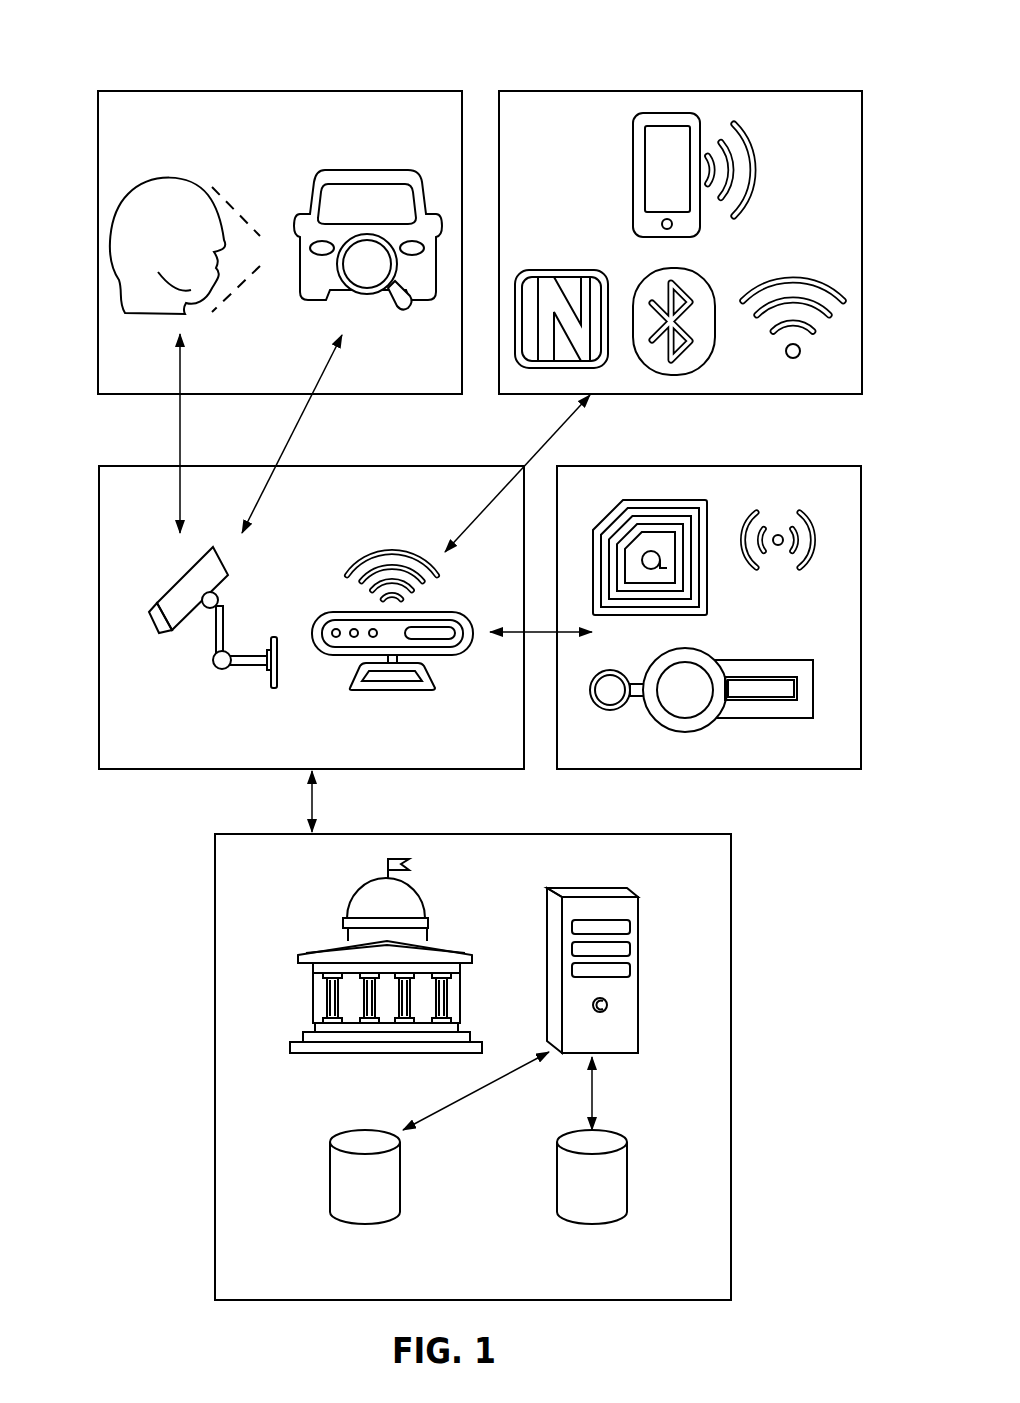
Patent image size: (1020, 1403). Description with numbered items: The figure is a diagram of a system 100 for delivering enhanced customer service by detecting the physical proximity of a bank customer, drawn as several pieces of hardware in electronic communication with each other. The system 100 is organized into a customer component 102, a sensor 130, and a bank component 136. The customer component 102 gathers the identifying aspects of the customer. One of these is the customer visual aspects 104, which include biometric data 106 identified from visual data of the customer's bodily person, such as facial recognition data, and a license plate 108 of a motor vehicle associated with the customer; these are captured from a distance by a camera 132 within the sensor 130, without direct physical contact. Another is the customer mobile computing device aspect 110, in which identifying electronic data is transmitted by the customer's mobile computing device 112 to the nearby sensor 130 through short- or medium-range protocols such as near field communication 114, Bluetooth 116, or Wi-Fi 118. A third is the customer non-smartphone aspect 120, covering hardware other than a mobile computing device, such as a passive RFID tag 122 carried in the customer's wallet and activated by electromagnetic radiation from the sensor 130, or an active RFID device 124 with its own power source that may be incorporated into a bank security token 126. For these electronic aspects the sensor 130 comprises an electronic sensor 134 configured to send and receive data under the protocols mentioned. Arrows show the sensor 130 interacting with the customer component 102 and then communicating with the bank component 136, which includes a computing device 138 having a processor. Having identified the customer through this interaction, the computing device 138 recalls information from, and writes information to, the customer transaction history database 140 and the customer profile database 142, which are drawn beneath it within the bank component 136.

The system 100 is at (860, 53).
The customer component 102 is at (92, 124).
The customer visual aspects 104 is at (130, 91).
The biometric data 106 is at (166, 178).
The license plate 108 is at (374, 171).
The customer mobile computing device aspect 110 is at (533, 91).
The mobile computing device 112 is at (633, 176).
The near field communication (NFC) 114 is at (547, 270).
The Bluetooth 116 is at (699, 277).
The Wi-Fi 118 is at (792, 280).
The customer non-smartphone aspect 120 is at (618, 770).
The RFID tag 122 is at (707, 520).
The active RFID device 124 is at (812, 612).
The bank security token 126 is at (790, 718).
The sensor 130 is at (149, 770).
The camera 132 is at (276, 690).
The electronic sensor 134 is at (425, 690).
The bank component 136 is at (215, 910).
The computing device 138 is at (640, 934).
The customer transaction history database 140 is at (333, 1135).
The customer profile database 142 is at (628, 1135).